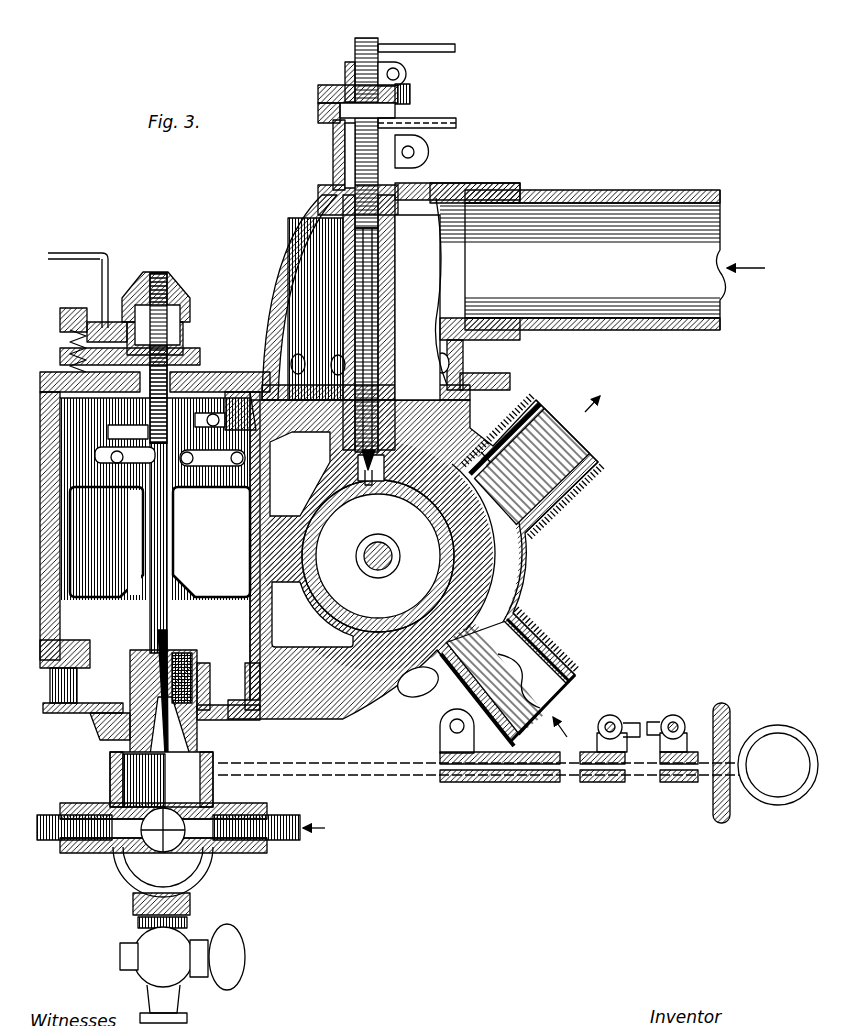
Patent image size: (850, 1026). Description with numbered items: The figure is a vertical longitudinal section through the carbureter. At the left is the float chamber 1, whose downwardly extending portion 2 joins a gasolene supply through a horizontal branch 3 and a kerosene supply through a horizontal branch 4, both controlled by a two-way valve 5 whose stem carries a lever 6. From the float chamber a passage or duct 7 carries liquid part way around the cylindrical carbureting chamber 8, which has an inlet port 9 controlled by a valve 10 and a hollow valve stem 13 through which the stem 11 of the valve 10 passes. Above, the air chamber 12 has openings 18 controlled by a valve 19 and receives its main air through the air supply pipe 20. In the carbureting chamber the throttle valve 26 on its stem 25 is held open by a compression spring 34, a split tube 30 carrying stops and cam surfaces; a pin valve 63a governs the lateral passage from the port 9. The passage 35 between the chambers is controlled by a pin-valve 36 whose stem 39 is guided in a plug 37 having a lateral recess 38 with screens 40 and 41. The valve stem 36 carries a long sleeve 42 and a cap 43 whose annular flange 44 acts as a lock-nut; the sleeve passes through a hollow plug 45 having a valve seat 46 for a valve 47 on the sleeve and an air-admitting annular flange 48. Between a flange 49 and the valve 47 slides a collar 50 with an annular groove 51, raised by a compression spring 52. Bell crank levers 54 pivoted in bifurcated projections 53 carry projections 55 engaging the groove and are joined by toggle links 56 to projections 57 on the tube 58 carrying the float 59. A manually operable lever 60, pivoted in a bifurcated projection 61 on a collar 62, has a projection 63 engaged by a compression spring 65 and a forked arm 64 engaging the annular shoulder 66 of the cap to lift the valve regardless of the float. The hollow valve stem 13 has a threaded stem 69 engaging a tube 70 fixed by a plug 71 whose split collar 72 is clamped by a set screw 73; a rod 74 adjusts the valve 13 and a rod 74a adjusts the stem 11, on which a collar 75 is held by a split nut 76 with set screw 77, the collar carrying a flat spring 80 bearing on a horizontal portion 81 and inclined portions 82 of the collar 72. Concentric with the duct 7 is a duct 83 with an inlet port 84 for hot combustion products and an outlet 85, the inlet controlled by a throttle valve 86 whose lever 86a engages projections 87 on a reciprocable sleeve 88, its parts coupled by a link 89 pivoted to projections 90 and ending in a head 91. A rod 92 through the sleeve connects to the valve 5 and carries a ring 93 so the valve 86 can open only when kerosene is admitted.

The float chamber 1 is at (76, 676).
The downwardly extending projecting portion 2 is at (110, 792).
The horizontal branch 3 is at (48, 842).
The horizontal branch 4 is at (290, 834).
The two-way valve 5 is at (120, 866).
The lever 6 is at (312, 100).
The passage or duct 7 is at (450, 360).
The carbureting chamber 8 is at (110, 672).
The inlet port 9 is at (470, 432).
The valve 10 is at (421, 322).
The valve stem 11 is at (366, 40).
The air chamber 12 is at (438, 300).
The hollow valve stem 13 is at (326, 242).
The openings 18 is at (336, 352).
The valve 19 is at (463, 352).
The air supply pipe 20 is at (606, 190).
The valve stem 25 is at (376, 570).
The throttle valve 26 is at (455, 556).
The tube 30 is at (211, 578).
The compression spring 34 is at (382, 540).
The passage 35 is at (152, 722).
The pin-valve 36 is at (168, 586).
The plug 37 is at (92, 718).
The lateral recess 38 is at (200, 668).
The stem 39 is at (182, 655).
The filtering screen 40 is at (160, 690).
The screen 41 is at (123, 770).
The sleeve 42 is at (182, 300).
The cap 43 is at (175, 285).
The annular flange 44 is at (190, 330).
The hollow plug 45 is at (196, 388).
The valve seat 46 is at (196, 356).
The valve 47 is at (58, 410).
The annular flange 48 is at (185, 312).
The flange 49 is at (110, 458).
The slidable collar 50 is at (108, 432).
The annular groove 51 is at (252, 408).
The compression spring 52 is at (106, 542).
The bifurcated projections 53 is at (238, 375).
The bell crank lever 54 is at (262, 452).
The projections 55 is at (211, 542).
The toggle links 56 is at (318, 445).
The projections 57 is at (178, 470).
The tube 58 is at (170, 552).
The float 59 is at (119, 537).
The manually operable lever 60 is at (108, 252).
The bifurcated projection 61 is at (70, 330).
The collar 62 is at (60, 368).
The projection 63 is at (62, 336).
The pin valve 63a is at (364, 480).
The arm 64 is at (205, 348).
The compression spring 65 is at (70, 342).
The annular shoulder 66 is at (100, 320).
The hollow threaded stem 69 is at (345, 156).
The tube 70 is at (380, 252).
The plug 71 is at (415, 186).
The split collar 72 is at (333, 150).
The set screw 73 is at (420, 152).
The rod 74 is at (422, 113).
The rod 74a is at (455, 46).
The collar 75 is at (410, 92).
The split nut 76 is at (345, 76).
The set screw 77 is at (400, 72).
The flat spring 80 is at (318, 96).
The horizontal portion 81 is at (318, 116).
The inclined portions 82 is at (395, 110).
The duct 83 is at (520, 592).
The inlet port 84 is at (568, 688).
The outlet 85 is at (590, 440).
The throttle valve 86 is at (525, 640).
The lever 86a is at (420, 697).
The projections 87 is at (440, 742).
The sleeve 88 is at (500, 776).
The link 89 is at (660, 722).
The projections 90 is at (612, 715).
The head 91 is at (730, 740).
The rod 92 is at (372, 768).
The ring 93 is at (778, 805).